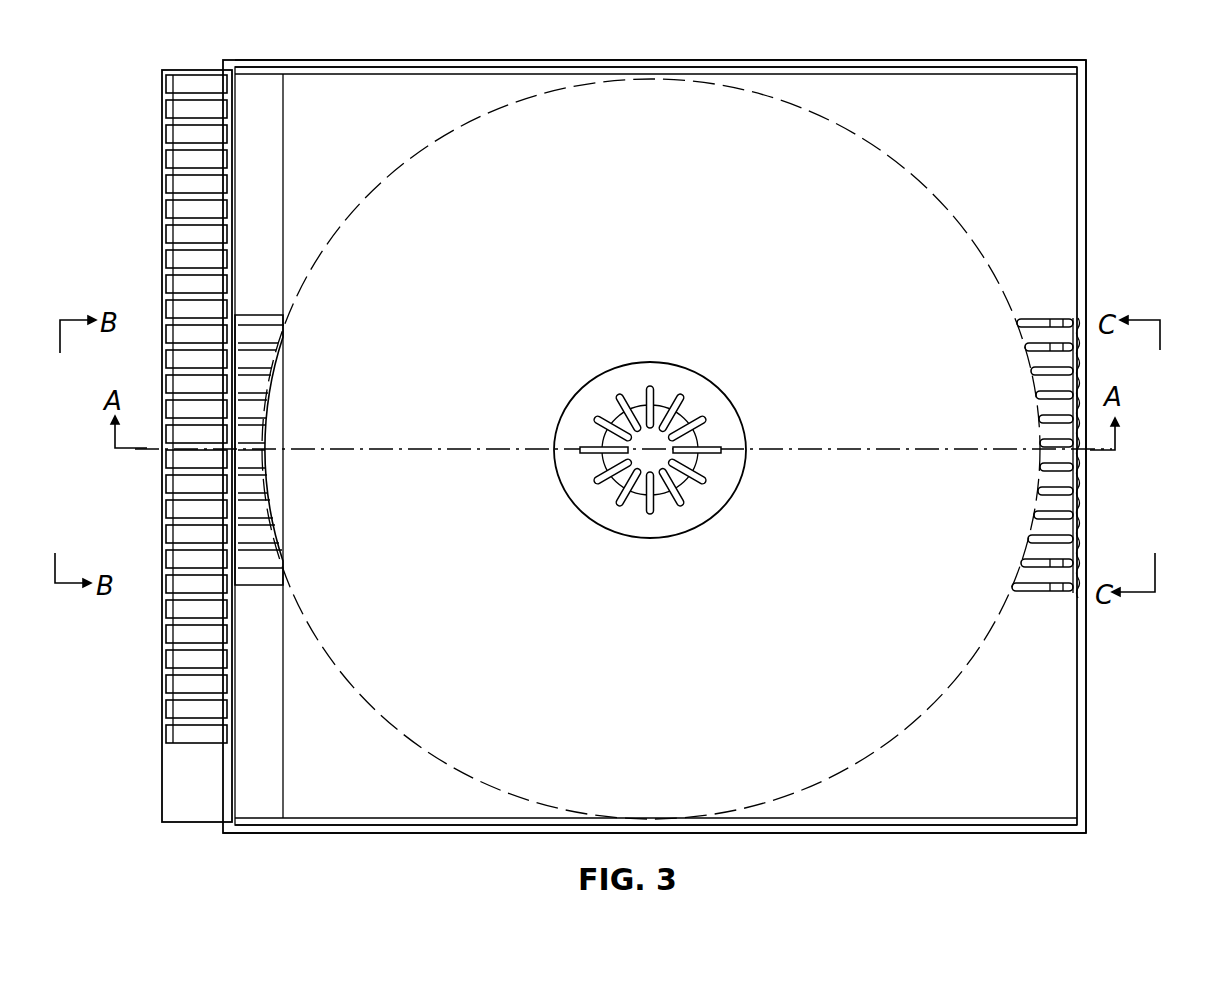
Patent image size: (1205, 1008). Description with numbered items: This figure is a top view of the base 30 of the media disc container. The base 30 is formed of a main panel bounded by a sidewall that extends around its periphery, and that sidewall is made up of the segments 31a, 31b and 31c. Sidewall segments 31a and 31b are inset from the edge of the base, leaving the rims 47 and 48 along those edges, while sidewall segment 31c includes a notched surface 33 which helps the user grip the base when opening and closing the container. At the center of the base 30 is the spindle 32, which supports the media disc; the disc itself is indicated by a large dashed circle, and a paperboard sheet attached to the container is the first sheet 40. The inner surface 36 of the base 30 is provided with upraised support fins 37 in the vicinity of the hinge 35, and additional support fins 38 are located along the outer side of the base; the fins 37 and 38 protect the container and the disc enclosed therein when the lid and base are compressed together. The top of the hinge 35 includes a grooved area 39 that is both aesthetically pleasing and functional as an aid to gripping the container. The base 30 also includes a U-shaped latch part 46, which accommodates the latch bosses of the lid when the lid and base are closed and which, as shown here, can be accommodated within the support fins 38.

The base 30 is at (1100, 658).
The sidewall segment 31a is at (304, 824).
The sidewall segment 31b is at (308, 76).
The sidewall segment 31c is at (1082, 222).
The spindle 32 is at (662, 338).
The notched surface 33 is at (1082, 538).
The hinge 35 is at (160, 822).
The inner surface 36 is at (1006, 786).
The support fins 37 is at (262, 570).
The support fins 38 is at (1038, 592).
The grooved area 39 is at (162, 521).
The first sheet 40 is at (932, 198).
The U-shaped latch part 46 is at (1052, 320).
The rim 47 is at (924, 836).
The rim 48 is at (1060, 60).